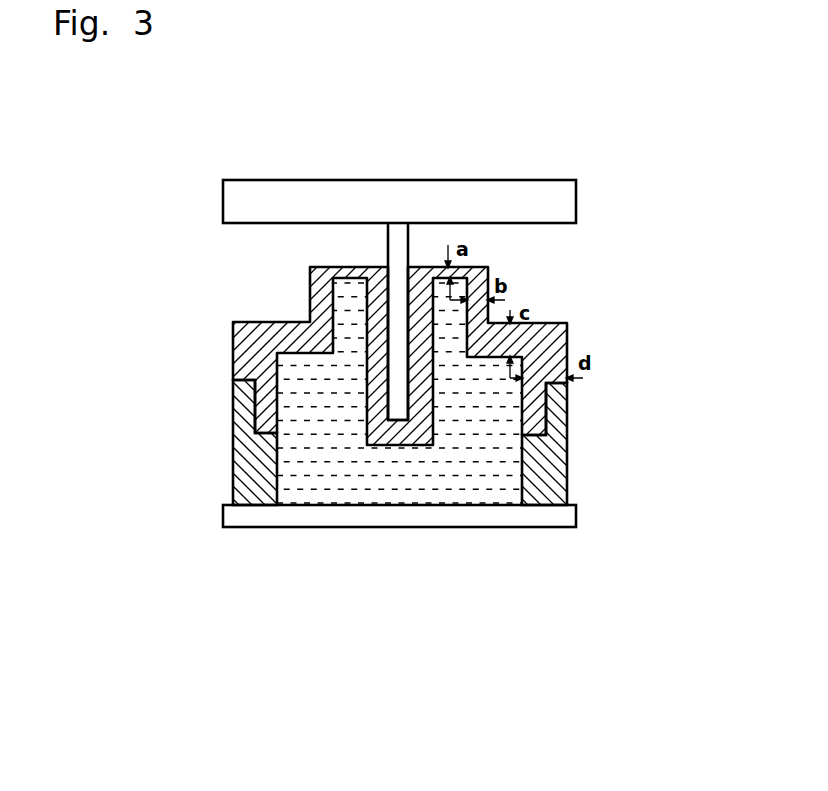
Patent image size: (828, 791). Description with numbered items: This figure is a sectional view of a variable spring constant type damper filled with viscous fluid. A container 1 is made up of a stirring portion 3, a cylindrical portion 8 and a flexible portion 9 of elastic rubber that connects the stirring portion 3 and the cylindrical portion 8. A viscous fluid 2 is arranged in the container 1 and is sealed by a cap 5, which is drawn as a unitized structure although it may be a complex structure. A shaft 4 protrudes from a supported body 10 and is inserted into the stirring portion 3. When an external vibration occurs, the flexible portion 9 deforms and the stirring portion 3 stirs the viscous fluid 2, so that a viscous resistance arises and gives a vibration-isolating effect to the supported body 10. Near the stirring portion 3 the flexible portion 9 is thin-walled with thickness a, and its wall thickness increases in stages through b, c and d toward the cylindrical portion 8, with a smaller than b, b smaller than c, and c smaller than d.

The container 1 is at (580, 248).
The viscous fluid 2 is at (460, 483).
The stirring portion 3 is at (365, 362).
The shaft 4 is at (394, 249).
The cap 5 is at (313, 522).
The cylindrical portion 8 is at (560, 467).
The flexible portion 9 is at (472, 235).
The supported body 10 is at (551, 204).